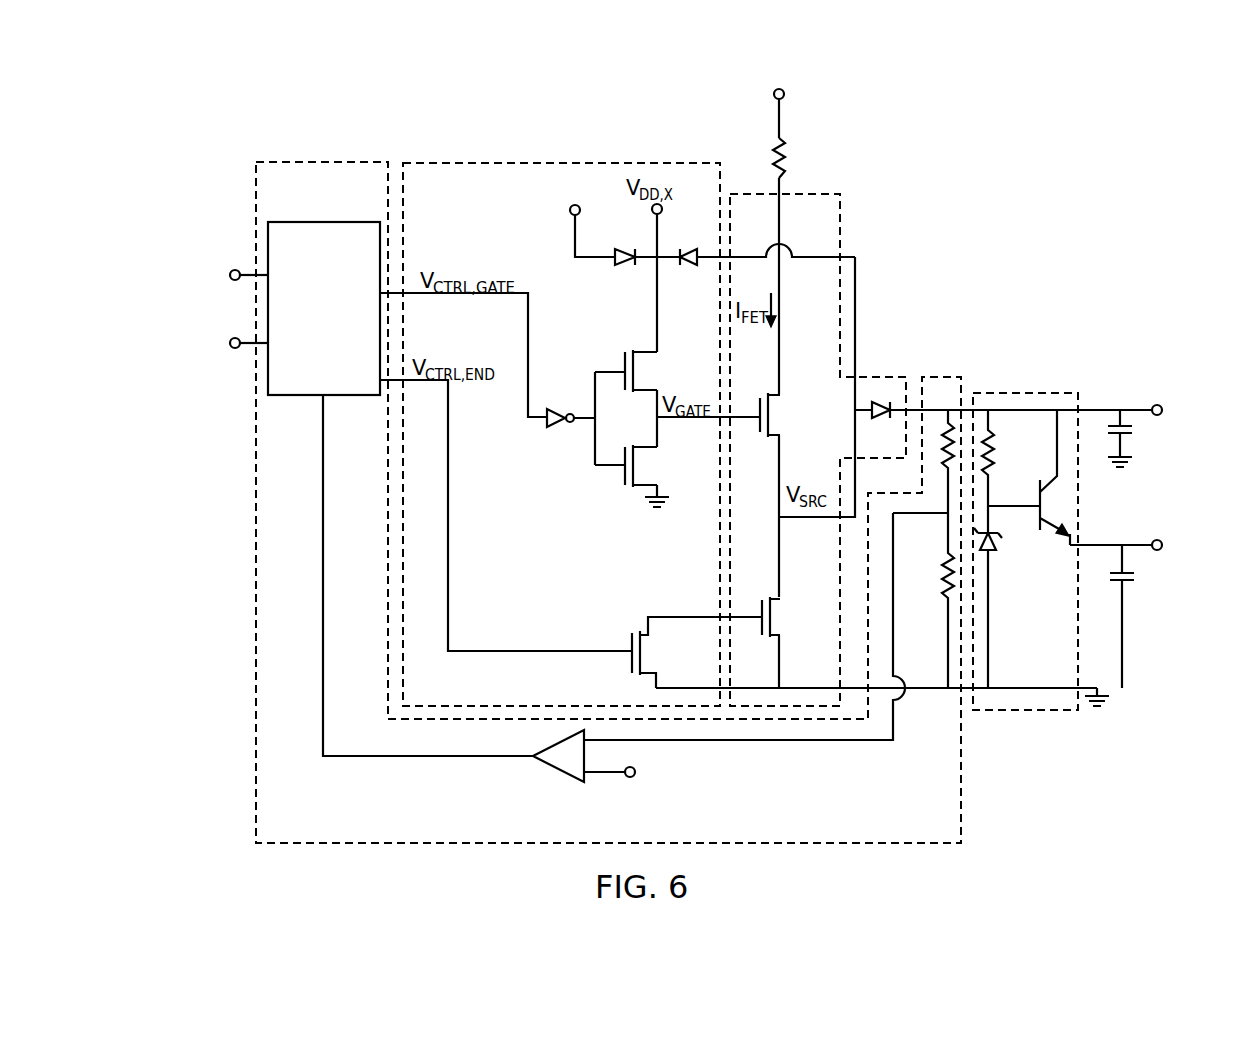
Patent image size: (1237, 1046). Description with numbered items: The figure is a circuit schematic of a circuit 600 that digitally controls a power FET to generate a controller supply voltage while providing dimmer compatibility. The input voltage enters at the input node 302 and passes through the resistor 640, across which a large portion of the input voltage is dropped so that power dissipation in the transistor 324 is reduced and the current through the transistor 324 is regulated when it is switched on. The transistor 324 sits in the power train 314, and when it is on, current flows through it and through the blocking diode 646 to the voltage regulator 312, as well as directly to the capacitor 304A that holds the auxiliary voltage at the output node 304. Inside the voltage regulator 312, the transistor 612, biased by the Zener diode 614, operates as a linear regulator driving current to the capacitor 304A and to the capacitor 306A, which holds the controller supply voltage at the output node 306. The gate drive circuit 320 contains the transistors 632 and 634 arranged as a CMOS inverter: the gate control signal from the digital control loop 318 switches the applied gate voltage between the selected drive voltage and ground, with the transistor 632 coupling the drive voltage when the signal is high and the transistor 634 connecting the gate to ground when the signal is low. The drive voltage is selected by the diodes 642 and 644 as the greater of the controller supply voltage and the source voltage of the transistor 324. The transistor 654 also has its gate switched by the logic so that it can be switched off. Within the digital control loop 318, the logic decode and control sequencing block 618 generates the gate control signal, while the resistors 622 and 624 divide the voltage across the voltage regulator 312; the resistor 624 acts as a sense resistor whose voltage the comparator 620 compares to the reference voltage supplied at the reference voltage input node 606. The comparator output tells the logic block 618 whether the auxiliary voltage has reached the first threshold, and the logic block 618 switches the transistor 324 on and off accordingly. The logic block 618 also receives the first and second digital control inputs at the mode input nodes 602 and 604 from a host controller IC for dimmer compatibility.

The circuit 600 is at (212, 140).
The input node 302 is at (786, 95).
The output node 304 is at (1160, 403).
The capacitor 304A is at (1124, 422).
The output node 306 is at (570, 212).
The capacitor 306A is at (1128, 584).
The voltage regulator 312 is at (1036, 391).
The power train 314 is at (842, 240).
The digital control loop 318 is at (346, 160).
The gate drive circuit 320 is at (588, 160).
The transistor (power FET) 324 is at (775, 438).
The mode input node 602 is at (233, 269).
The mode input node 604 is at (233, 350).
The reference voltage input node 606 is at (630, 779).
The transistor 612 is at (1040, 526).
The Zener diode 614 is at (993, 542).
The logic decode and control sequencing block 618 is at (322, 221).
The comparator 620 is at (546, 764).
The resistor 622 is at (944, 472).
The resistor 624 is at (945, 596).
The transistor 632 is at (638, 350).
The transistor 634 is at (642, 488).
The resistor 640 is at (788, 158).
The diode 642 is at (619, 250).
The diode 644 is at (695, 250).
The blocking diode 646 is at (880, 400).
The transistor 654 is at (777, 637).